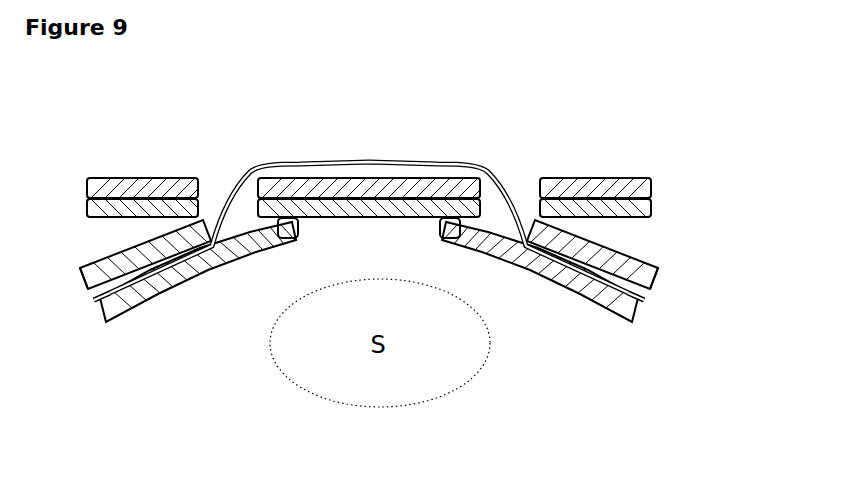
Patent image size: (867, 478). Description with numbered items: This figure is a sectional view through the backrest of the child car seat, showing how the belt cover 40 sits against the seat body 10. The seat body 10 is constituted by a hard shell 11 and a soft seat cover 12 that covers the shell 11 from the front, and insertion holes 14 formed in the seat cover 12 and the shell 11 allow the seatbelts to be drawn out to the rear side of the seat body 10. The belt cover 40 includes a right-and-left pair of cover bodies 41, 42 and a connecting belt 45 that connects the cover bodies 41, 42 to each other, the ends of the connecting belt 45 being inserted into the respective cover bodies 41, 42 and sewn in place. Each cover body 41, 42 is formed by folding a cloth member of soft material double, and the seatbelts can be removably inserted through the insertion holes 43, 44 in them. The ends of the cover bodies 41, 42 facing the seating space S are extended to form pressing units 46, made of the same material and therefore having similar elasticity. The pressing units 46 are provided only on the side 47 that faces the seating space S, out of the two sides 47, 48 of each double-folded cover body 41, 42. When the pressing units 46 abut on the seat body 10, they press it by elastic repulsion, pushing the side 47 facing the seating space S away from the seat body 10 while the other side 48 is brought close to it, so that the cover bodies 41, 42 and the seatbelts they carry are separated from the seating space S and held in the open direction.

The seat body 10 is at (425, 177).
The shell 11 is at (631, 178).
The seat cover 12 is at (397, 205).
The insertion holes 14 is at (208, 188).
The belt cover 40 is at (380, 240).
The cover body 41 is at (578, 300).
The cover body 42 is at (198, 278).
The insertion hole 43 is at (535, 278).
The insertion hole 44 is at (145, 302).
The connecting belt 45 is at (355, 160).
The pressing units 46 is at (283, 240).
The side 47 is at (121, 318).
The side 48 is at (102, 276).